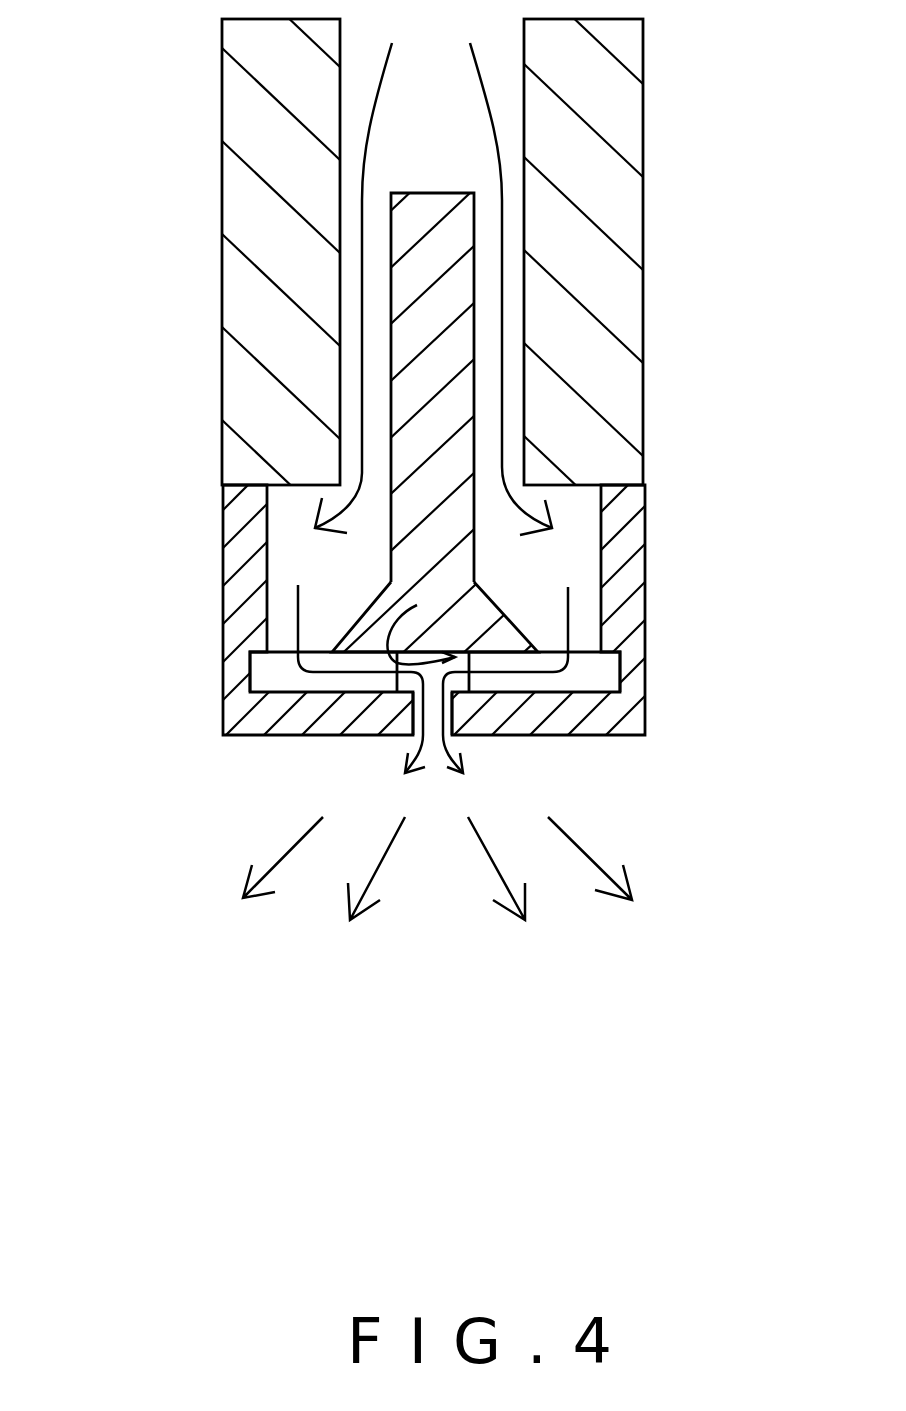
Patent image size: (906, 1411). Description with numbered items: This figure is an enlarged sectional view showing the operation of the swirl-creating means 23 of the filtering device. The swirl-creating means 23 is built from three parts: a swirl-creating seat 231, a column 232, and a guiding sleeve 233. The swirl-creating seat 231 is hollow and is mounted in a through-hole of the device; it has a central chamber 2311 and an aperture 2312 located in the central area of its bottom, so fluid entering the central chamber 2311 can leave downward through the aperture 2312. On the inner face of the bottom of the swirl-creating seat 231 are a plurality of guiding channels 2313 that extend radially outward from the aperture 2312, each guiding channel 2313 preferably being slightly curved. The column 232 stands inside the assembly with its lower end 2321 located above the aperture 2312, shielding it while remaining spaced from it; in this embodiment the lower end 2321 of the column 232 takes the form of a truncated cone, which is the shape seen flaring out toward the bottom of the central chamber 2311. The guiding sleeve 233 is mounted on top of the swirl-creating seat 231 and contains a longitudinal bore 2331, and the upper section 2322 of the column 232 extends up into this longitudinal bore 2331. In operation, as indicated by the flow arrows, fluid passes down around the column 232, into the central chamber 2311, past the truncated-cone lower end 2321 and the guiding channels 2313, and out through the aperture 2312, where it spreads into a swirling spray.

The swirl-creating means 23 is at (193, 327).
The guiding sleeve 233 is at (588, 258).
The longitudinal bore 2331 is at (513, 329).
The column 232 is at (576, 452).
The upper section 2322 is at (437, 398).
The lower end 2321 is at (455, 602).
The swirl-creating seat 231 is at (331, 622).
The central chamber 2311 is at (285, 556).
The aperture 2312 is at (432, 708).
The guiding channels 2313 is at (288, 678).